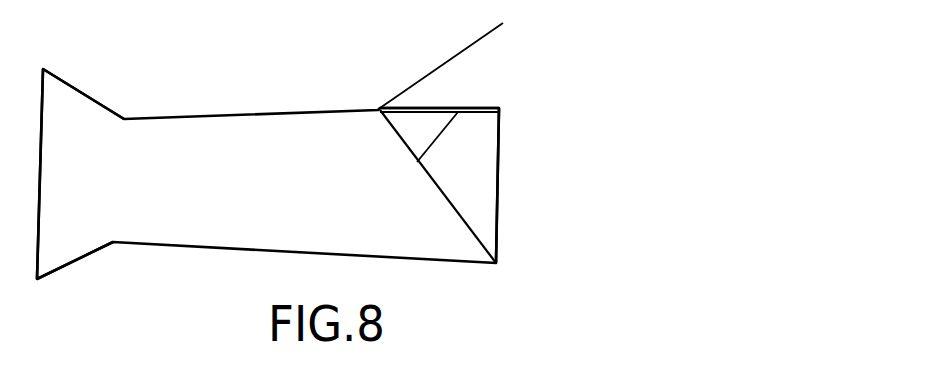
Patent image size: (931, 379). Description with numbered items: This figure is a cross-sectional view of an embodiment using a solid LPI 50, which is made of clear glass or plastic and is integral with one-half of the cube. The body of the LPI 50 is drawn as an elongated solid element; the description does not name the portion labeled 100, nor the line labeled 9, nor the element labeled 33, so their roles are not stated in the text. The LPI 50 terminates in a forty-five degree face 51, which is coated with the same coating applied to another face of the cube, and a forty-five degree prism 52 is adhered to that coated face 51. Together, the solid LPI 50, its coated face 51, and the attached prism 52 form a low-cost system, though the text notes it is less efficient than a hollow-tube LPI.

The insert body 100 is at (83, 90).
The LPI 50 is at (263, 91).
The section line / cutting plane 9 is at (470, 43).
The 45° face 51 is at (458, 112).
The strip 33 is at (481, 106).
The 45° prism 52 is at (485, 155).